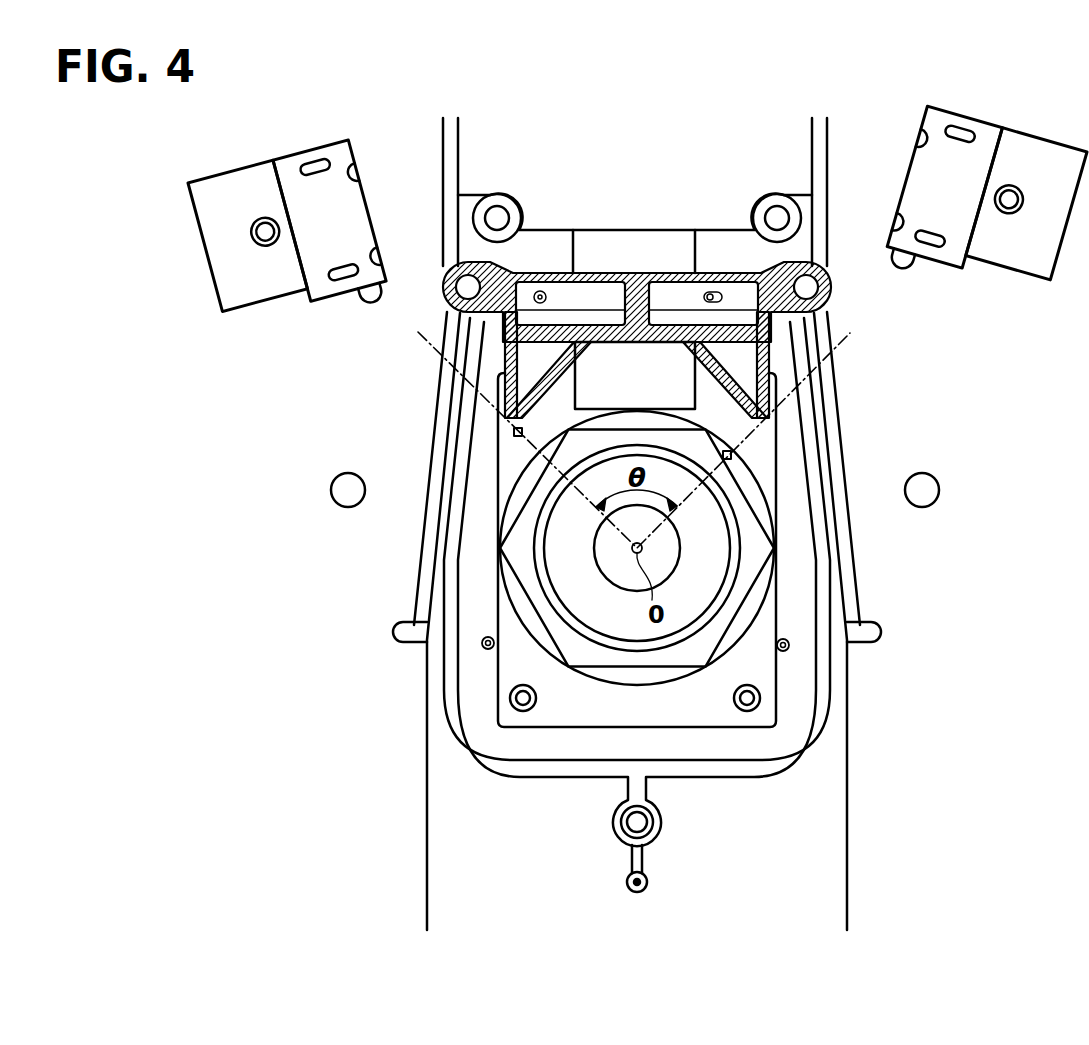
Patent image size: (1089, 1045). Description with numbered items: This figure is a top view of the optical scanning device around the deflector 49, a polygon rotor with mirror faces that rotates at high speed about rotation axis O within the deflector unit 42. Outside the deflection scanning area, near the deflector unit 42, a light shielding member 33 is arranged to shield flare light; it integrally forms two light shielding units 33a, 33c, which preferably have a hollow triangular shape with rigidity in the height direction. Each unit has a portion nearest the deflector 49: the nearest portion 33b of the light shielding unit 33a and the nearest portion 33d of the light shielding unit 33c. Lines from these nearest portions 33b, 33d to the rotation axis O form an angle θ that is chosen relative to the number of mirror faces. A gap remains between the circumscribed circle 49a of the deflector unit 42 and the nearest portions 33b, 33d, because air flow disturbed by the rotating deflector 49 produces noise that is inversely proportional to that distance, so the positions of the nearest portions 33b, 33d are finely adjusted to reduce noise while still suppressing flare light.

The light shielding member 33 is at (640, 333).
The light shielding unit 33a is at (532, 360).
The nearest portion 33b is at (512, 422).
The light shielding unit 33c is at (745, 360).
The nearest portion 33d is at (740, 425).
The deflector 49 is at (757, 565).
The circumscribed circle 49a is at (575, 655).
The deflector unit 42 is at (710, 710).